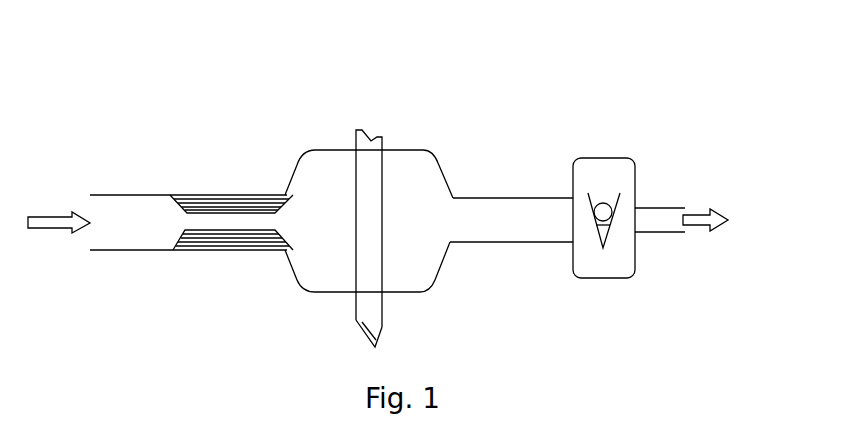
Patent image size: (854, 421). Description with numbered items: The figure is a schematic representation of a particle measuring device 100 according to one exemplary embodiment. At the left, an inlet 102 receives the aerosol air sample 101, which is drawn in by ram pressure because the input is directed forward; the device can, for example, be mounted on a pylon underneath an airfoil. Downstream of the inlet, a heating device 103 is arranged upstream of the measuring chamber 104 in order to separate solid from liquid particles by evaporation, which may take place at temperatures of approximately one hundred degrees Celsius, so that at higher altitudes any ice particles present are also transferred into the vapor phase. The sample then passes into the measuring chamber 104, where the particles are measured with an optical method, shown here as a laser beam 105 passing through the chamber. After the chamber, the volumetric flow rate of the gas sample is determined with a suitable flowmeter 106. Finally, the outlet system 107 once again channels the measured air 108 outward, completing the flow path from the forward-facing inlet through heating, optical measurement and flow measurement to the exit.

The measuring device 100 is at (715, 100).
The aerosol air sample 101 is at (48, 233).
The inlet 102 is at (117, 202).
The heating device 103 is at (223, 205).
The measuring chamber 104 is at (415, 168).
The laser beam 105 is at (368, 137).
The flowmeter 106 is at (608, 270).
The outlet system 107 is at (650, 207).
The measured air 108 is at (717, 225).